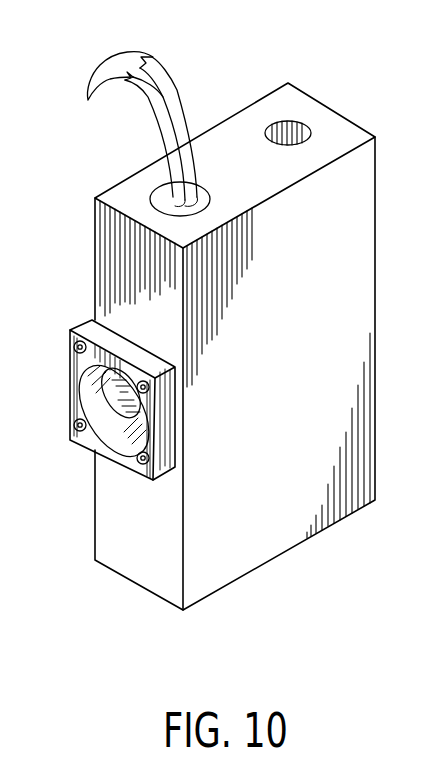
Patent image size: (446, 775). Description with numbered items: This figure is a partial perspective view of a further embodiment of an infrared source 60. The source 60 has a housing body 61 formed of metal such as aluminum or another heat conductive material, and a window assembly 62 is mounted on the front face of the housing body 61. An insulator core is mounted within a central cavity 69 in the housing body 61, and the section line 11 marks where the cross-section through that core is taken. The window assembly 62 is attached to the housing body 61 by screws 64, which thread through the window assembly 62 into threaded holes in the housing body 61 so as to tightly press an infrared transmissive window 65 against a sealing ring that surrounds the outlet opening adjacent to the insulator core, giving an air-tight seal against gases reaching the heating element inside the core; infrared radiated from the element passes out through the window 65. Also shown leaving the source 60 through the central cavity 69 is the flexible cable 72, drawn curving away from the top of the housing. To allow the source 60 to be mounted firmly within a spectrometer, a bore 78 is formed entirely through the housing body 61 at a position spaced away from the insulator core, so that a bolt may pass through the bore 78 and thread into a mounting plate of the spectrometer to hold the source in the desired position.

The infrared source 60 is at (378, 188).
The housing body 61 is at (366, 414).
The window assembly 62 is at (72, 383).
The screws 64 is at (76, 347).
The infrared transmissive window 65 is at (122, 392).
The central cavity 69 is at (160, 183).
The ribbon cable 72 is at (135, 129).
The bore 78 is at (291, 120).
The section line 11- 11 is at (224, 163).